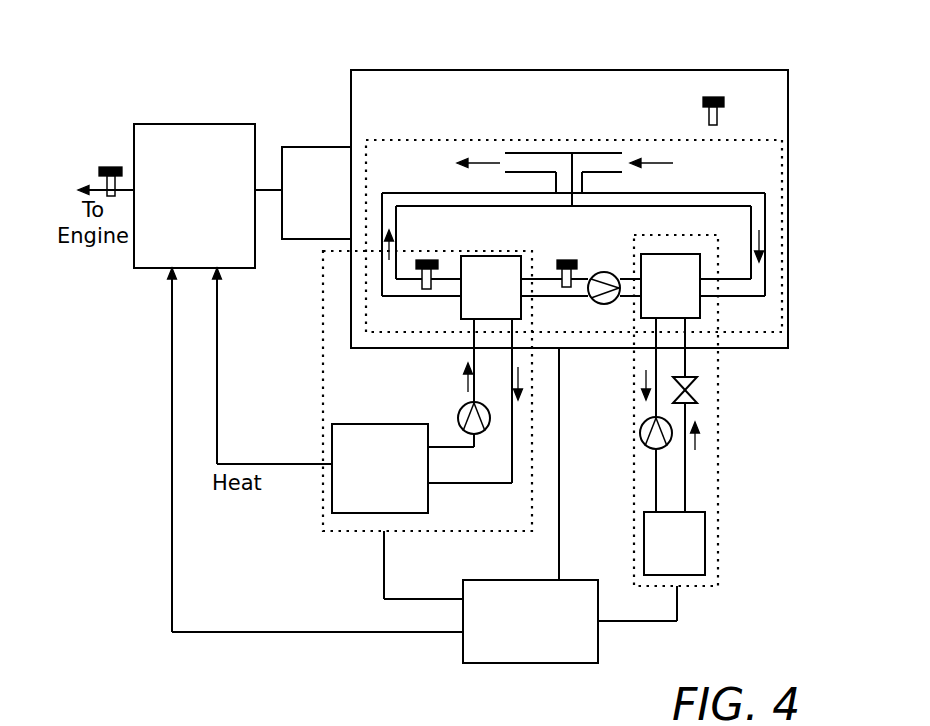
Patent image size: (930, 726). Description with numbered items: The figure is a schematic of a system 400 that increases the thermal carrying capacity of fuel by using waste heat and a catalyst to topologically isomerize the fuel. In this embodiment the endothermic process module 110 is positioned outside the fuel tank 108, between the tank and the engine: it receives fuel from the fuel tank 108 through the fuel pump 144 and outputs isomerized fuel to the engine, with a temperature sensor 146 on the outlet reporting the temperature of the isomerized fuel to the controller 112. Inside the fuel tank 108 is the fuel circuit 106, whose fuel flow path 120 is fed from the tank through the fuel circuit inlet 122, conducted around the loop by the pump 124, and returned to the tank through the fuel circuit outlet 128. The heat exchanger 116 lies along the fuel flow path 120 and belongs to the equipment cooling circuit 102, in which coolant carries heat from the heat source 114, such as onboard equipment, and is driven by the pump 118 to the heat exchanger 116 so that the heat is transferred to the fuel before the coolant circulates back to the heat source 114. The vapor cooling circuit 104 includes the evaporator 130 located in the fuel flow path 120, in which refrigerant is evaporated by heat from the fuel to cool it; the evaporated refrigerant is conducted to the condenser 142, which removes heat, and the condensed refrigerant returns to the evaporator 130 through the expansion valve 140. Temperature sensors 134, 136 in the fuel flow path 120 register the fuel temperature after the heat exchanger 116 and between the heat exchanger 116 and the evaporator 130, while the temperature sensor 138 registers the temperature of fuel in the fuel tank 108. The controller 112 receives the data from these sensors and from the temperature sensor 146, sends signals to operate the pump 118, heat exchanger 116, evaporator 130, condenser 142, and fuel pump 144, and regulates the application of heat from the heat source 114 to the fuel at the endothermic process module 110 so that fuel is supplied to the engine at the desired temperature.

The system 400 is at (142, 42).
The equipment cooling circuit 102 is at (320, 400).
The vapor cooling circuit 104 is at (633, 535).
The fuel circuit 106 is at (415, 139).
The fuel tank 108 is at (776, 100).
The endothermic process module 110 is at (177, 251).
The controller 112 is at (514, 653).
The heat source 114 is at (363, 508).
The heat exchanger 116 is at (474, 296).
The pump 118 is at (457, 412).
The fuel flow path 120 is at (432, 192).
The fuel circuit inlet 122 is at (617, 158).
The pump 124 is at (613, 257).
The fuel circuit outlet 128 is at (507, 157).
The evaporator 130 is at (653, 293).
The temperature sensor 134 is at (425, 260).
The temperature sensor 136 is at (565, 260).
The temperature sensor 138 is at (708, 113).
The expansion valve 140 is at (693, 395).
The condenser 142 is at (658, 560).
The fuel pump 144 is at (299, 230).
The temperature sensor 146 is at (110, 164).